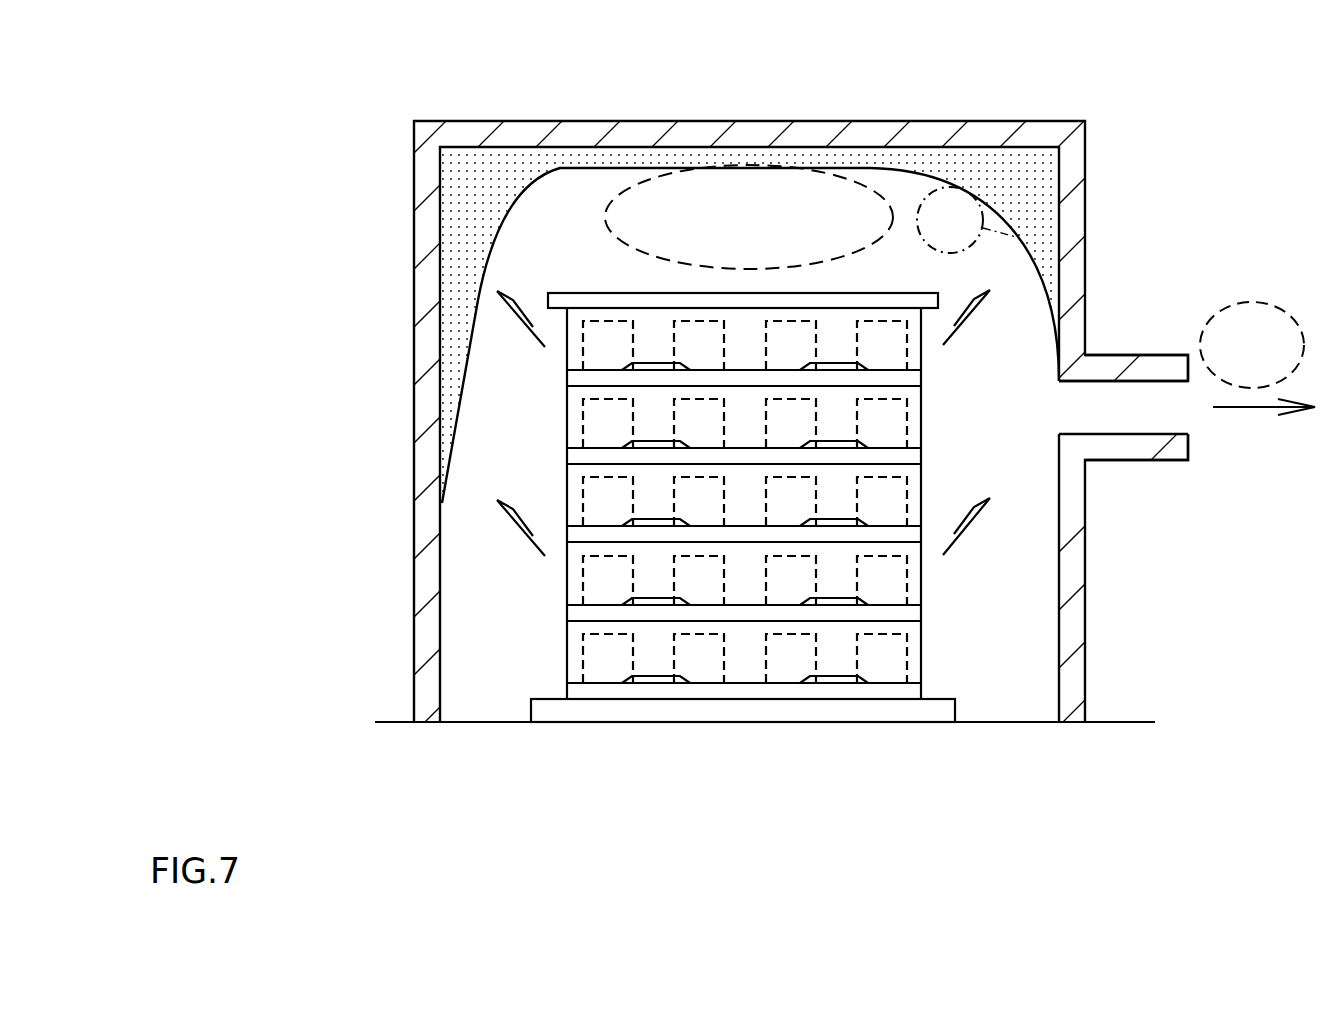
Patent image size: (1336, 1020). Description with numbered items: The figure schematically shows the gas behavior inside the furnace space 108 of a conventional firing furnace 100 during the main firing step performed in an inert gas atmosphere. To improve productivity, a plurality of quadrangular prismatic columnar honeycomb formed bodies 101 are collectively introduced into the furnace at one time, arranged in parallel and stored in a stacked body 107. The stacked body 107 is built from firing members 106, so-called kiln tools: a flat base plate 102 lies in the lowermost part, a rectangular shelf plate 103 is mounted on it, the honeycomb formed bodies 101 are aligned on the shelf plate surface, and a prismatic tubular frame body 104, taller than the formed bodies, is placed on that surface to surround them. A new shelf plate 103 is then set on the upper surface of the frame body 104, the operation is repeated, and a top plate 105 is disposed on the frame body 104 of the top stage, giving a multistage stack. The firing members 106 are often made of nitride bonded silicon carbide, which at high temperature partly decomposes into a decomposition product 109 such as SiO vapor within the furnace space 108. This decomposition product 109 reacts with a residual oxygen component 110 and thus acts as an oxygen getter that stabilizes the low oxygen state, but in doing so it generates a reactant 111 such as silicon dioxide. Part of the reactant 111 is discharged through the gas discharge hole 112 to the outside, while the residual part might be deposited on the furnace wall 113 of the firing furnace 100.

The firing furnace 100 is at (707, 130).
The honeycomb formed body 101 is at (927, 432).
The base plate 102 is at (553, 710).
The shelf plate 103 is at (582, 380).
The frame body 104 is at (922, 368).
The top plate 105 is at (655, 298).
The firing member 106 is at (750, 335).
The stacked body 107 is at (562, 405).
The furnace space 108 is at (585, 173).
The decomposition product 109 is at (605, 222).
The oxygen component 110 is at (1085, 208).
The reactant 111 is at (1253, 292).
The gas discharge hole 112 is at (1142, 370).
The furnace wall 113 is at (1058, 165).